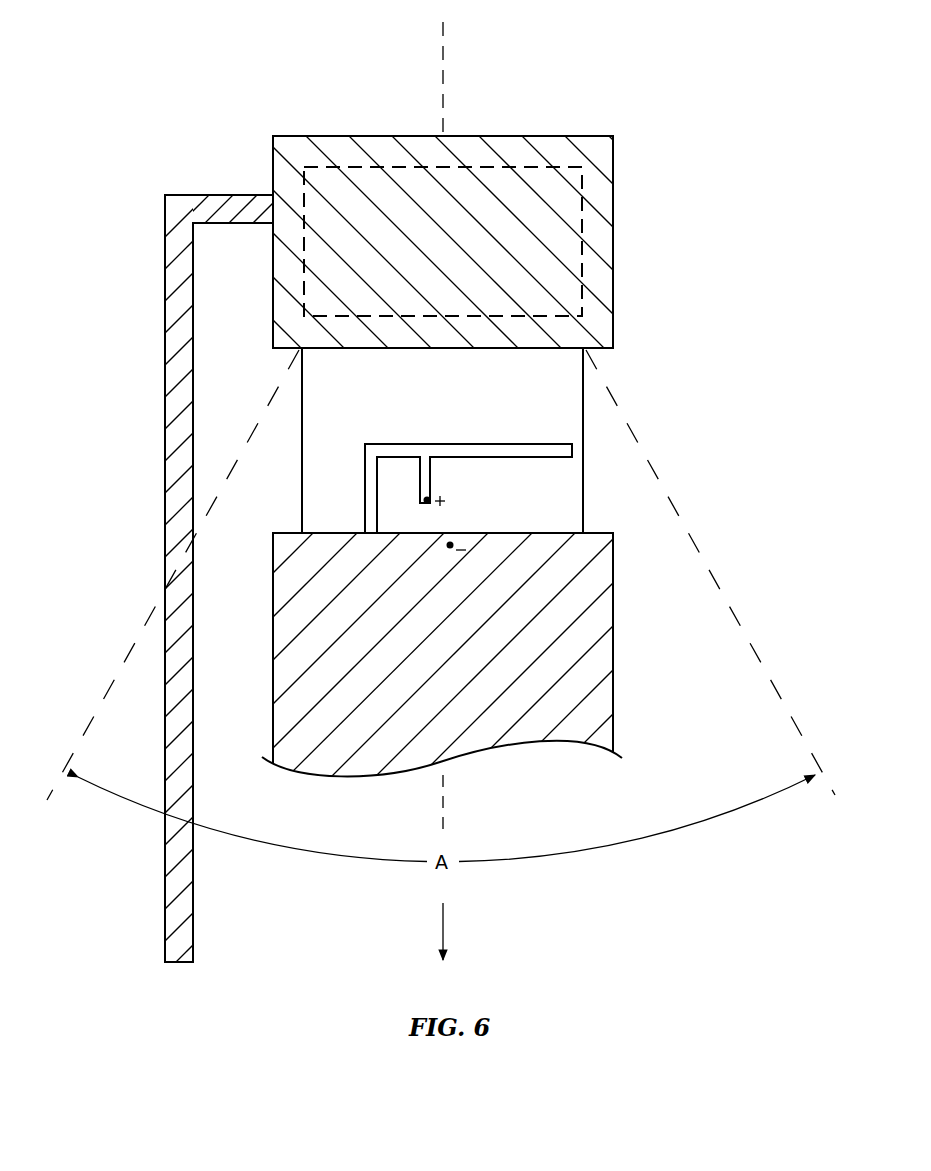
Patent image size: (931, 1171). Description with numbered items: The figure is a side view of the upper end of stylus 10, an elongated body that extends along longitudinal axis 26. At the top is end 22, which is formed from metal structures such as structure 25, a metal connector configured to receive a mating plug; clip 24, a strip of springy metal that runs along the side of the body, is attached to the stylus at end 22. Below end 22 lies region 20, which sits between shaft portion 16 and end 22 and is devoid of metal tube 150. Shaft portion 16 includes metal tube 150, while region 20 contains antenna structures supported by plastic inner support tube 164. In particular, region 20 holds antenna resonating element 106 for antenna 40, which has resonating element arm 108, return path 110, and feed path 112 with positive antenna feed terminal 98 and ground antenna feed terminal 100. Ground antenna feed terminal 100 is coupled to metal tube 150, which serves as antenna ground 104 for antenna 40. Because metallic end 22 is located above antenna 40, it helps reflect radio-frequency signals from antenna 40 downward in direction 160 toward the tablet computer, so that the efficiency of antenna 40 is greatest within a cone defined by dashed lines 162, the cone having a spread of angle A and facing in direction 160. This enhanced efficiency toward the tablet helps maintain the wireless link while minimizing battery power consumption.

The stylus 10 is at (718, 157).
The shaft portion 16 is at (252, 758).
The region 20 is at (252, 350).
The end 22 is at (625, 137).
The clip 24 is at (165, 517).
The structure 25 is at (542, 166).
The longitudinal axis 26 is at (444, 60).
The antenna 40 is at (484, 467).
The positive antenna feed terminal 98 is at (424, 498).
The ground antenna feed terminal 100 is at (453, 543).
The antenna ground 104 is at (626, 543).
The antenna resonating element 106 is at (351, 466).
The resonating element arm 108 is at (492, 443).
The return path 110 is at (364, 495).
The feed path 112 is at (451, 505).
The metal tube 150 is at (614, 651).
The direction 160 is at (444, 924).
The dashed lines 162 is at (128, 651).
The plastic inner support tube 164 is at (584, 377).